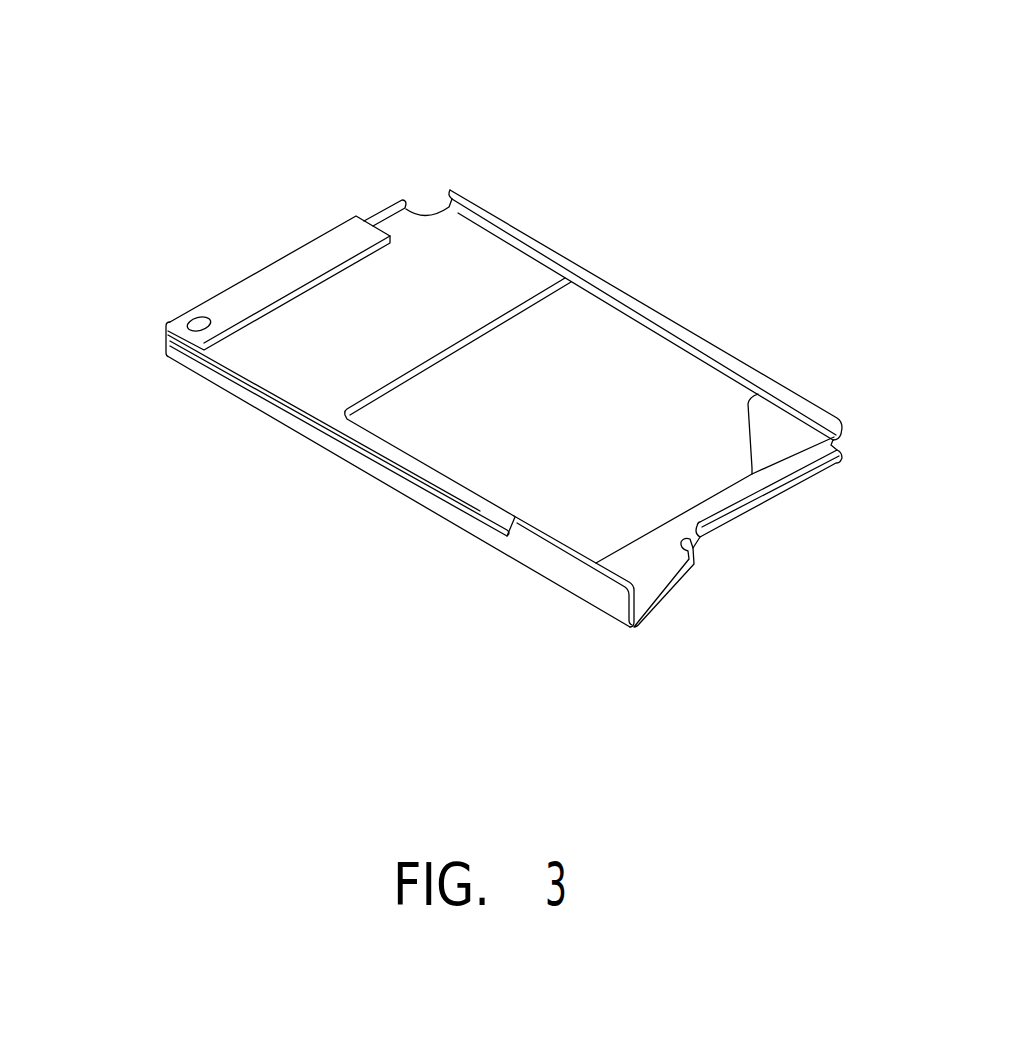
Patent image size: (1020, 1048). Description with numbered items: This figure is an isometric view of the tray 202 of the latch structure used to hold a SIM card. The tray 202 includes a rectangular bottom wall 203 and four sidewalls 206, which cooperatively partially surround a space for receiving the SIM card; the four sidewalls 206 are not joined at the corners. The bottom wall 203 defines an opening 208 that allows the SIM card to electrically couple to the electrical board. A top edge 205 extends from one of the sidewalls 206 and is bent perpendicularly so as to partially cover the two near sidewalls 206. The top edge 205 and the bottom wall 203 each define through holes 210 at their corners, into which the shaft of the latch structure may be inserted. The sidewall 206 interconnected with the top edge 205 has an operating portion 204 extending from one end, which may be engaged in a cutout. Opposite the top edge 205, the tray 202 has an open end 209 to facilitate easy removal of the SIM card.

The tray 202 is at (492, 43).
The bottom wall 203 is at (317, 381).
The operating portion 204 is at (553, 558).
The top edge 205 is at (344, 238).
The sidewalls 206 is at (392, 205).
The opening 208 is at (633, 373).
The open end 209 is at (665, 573).
The through hole 210 is at (182, 321).